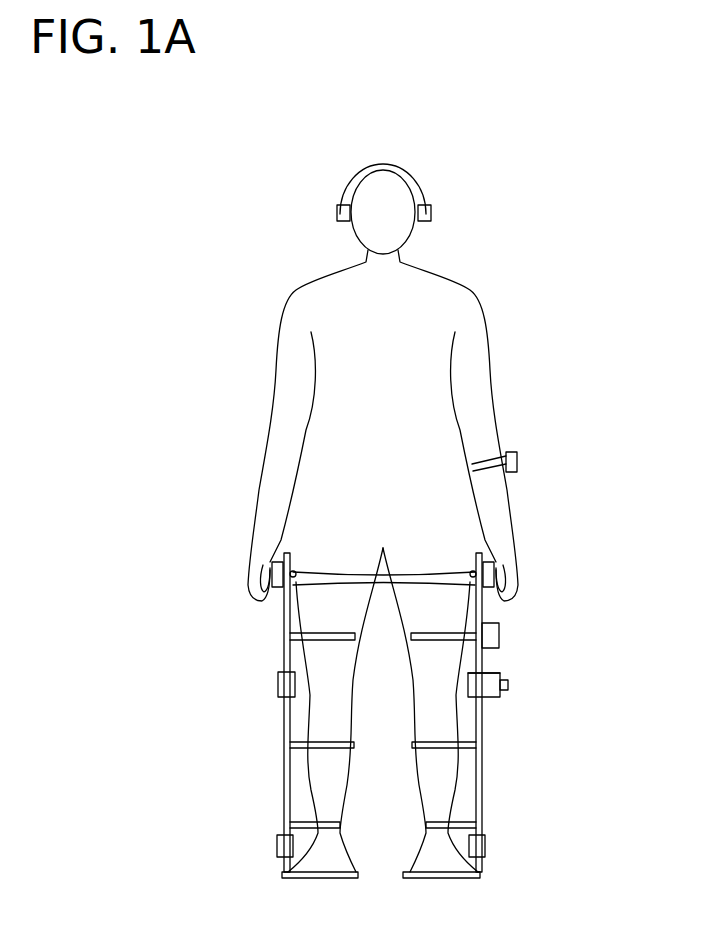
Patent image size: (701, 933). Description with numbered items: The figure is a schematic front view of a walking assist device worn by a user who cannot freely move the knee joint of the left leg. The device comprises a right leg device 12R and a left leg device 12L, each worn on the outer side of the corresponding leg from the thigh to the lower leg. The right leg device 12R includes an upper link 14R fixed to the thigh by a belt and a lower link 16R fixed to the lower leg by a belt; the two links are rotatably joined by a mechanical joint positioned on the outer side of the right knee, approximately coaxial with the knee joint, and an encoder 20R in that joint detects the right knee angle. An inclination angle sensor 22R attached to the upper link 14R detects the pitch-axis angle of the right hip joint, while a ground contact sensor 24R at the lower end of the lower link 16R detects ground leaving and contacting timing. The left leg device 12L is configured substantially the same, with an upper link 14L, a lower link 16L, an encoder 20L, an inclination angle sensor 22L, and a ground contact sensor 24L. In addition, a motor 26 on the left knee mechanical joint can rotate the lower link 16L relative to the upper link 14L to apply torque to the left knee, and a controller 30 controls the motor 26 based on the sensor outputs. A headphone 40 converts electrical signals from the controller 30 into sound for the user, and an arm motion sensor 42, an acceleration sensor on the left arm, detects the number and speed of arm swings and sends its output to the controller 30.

The right leg device 12R is at (262, 748).
The left leg device 12L is at (504, 748).
The upper link 14R is at (286, 607).
The upper link 14L is at (484, 607).
The lower link 16R is at (286, 779).
The lower link 16L is at (483, 780).
The encoder 20R is at (286, 684).
The encoder 20L is at (508, 685).
The inclination angle sensor 22R is at (281, 578).
The inclination angle sensor 22L is at (494, 585).
The ground contact sensor 24R is at (284, 884).
The ground contact sensor 24L is at (483, 886).
The motor 26 is at (486, 671).
The controller 30 is at (492, 636).
The headphone 40 is at (431, 213).
The arm motion sensor 42 is at (517, 462).